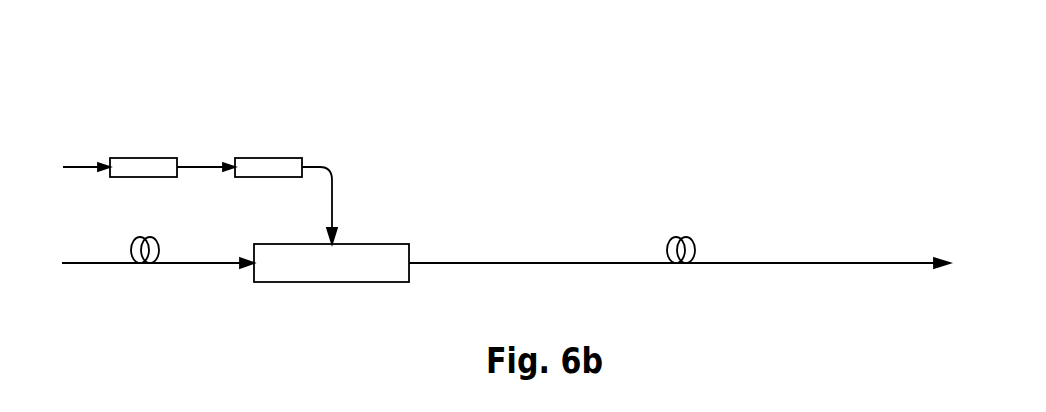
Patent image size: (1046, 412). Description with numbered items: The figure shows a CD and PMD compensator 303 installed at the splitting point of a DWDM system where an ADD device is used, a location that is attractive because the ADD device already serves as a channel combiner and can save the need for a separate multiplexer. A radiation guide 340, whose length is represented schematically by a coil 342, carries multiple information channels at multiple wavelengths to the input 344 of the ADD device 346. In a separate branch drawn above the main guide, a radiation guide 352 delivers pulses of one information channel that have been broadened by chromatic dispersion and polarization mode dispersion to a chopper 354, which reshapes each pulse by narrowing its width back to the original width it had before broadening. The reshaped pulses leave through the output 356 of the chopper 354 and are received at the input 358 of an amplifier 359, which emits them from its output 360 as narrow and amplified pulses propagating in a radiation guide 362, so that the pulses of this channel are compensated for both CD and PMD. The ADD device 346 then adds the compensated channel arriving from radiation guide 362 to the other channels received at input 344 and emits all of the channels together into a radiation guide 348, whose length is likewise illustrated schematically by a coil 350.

The CD and PMD compensator 303 is at (848, 130).
The radiation guide 340 is at (103, 263).
The coil 342 is at (160, 237).
The input 344 is at (190, 263).
The ADD device 346 is at (283, 244).
The radiation guide 348 is at (553, 263).
The coil 350 is at (733, 225).
The radiation guide 352 is at (78, 167).
The chopper 354 is at (130, 158).
The output 356 is at (182, 167).
The input 358 is at (215, 167).
The amplifier 359 is at (283, 158).
The output 360 is at (318, 167).
The radiation guide 362 is at (336, 226).